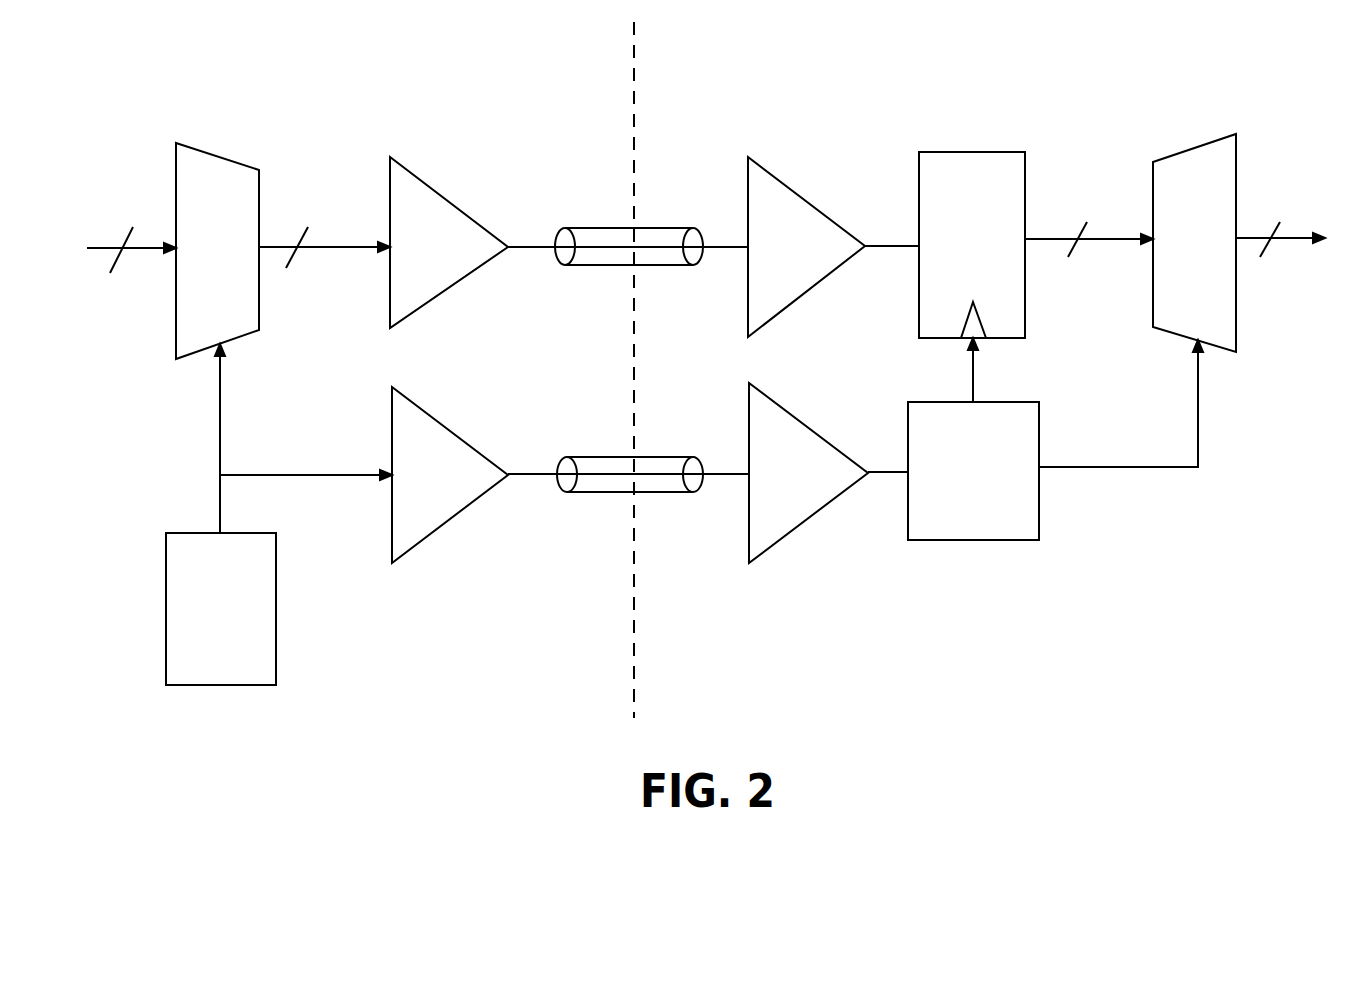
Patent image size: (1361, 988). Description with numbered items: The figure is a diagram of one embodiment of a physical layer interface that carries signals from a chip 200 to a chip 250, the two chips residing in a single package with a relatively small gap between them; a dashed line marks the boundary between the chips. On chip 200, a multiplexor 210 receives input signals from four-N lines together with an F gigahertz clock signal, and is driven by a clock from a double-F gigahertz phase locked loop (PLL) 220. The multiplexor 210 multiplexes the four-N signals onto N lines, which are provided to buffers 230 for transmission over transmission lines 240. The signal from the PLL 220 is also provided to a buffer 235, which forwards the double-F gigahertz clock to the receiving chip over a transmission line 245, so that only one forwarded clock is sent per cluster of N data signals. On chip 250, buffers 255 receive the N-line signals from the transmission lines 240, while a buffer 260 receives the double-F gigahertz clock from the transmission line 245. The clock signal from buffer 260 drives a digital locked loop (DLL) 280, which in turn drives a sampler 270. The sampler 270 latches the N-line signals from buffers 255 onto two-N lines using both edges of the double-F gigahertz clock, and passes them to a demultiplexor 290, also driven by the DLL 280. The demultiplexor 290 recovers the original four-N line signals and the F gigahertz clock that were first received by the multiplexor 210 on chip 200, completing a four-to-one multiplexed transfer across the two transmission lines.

The chip 200 is at (317, 751).
The multiplexor 210 is at (235, 261).
The 2F GHz phase locked loop (PLL) 220 is at (241, 646).
The buffer 230 is at (456, 261).
The buffer 235 is at (456, 487).
The transmission line 240 is at (657, 228).
The transmission line 245 is at (658, 493).
The chip 250 is at (1057, 751).
The buffer 255 is at (808, 257).
The buffer 260 is at (811, 487).
The sampler 270 is at (996, 257).
The digital locked loop (DLL) 280 is at (996, 504).
The demultiplexor 290 is at (1219, 252).